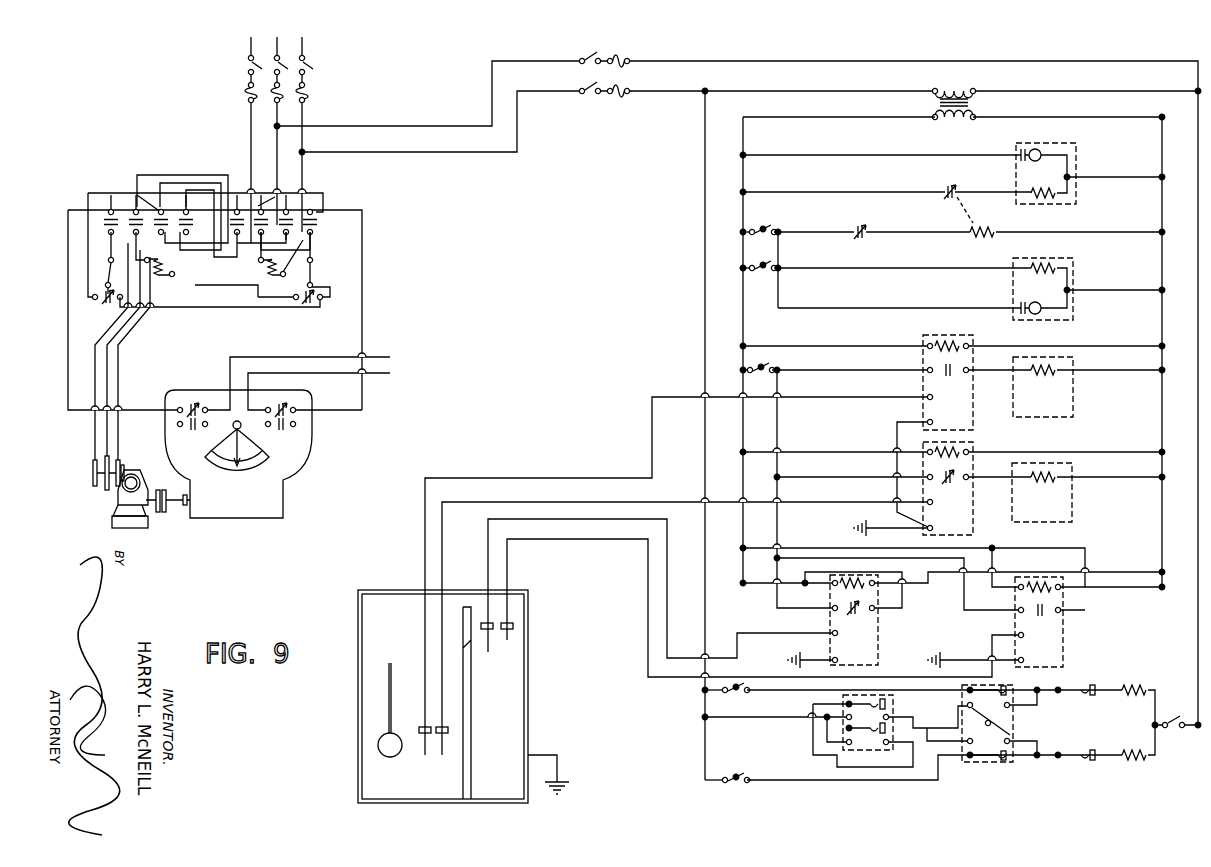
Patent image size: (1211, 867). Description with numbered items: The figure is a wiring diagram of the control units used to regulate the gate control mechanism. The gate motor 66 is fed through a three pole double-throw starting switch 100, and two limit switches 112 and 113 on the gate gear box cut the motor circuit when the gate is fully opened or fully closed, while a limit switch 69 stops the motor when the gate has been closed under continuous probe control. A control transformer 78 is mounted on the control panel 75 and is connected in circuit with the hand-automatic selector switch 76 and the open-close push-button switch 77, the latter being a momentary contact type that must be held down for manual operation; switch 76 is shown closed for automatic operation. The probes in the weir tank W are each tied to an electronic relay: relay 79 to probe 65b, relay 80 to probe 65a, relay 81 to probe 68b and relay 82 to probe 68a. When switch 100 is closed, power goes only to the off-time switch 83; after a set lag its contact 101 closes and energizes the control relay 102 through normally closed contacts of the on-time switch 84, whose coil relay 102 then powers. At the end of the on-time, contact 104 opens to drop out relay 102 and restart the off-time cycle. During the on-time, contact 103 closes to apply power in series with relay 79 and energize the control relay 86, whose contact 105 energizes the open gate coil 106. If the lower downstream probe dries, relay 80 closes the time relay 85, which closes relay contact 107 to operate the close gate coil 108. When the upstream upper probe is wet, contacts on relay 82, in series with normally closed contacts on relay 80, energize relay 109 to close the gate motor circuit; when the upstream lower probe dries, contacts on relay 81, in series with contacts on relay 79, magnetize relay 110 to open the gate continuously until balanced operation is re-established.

The three pole double-throw starting switch 100 is at (307, 65).
The control transformer 78 is at (976, 102).
The off-time switch 83 is at (1050, 206).
The on-time switch 84 is at (1048, 323).
The control relay (time) 85 is at (1048, 524).
The control relay (open) 86 is at (1050, 421).
The electronic relay 79 is at (973, 427).
The electronic relay 80 is at (973, 531).
The electronic relay 81 is at (1063, 656).
The electronic relay 82 is at (878, 652).
The contact 101 is at (764, 224).
The control relay (closed) 102 is at (975, 241).
The contact 103 is at (760, 363).
The contact 104 is at (772, 276).
The contact of relay 86 105 is at (738, 699).
The relay contact 107 is at (738, 789).
The open gate coil 106 is at (262, 279).
The close gate coil 108 is at (168, 266).
The relay 109 is at (1130, 762).
The relay 110 is at (1138, 688).
The control panel 75 is at (938, 780).
The hand-automatic selector switch 76 is at (860, 752).
The open-close switch 77 is at (1000, 766).
The motor 66 is at (92, 469).
The limit switch 69 is at (232, 468).
The limit switch 112 is at (188, 432).
The limit switch 113 is at (276, 432).
The water tank W is at (562, 690).
The probe 65a is at (422, 738).
The probe 65b is at (440, 738).
The probe 68a is at (491, 632).
The probe 68b is at (513, 626).